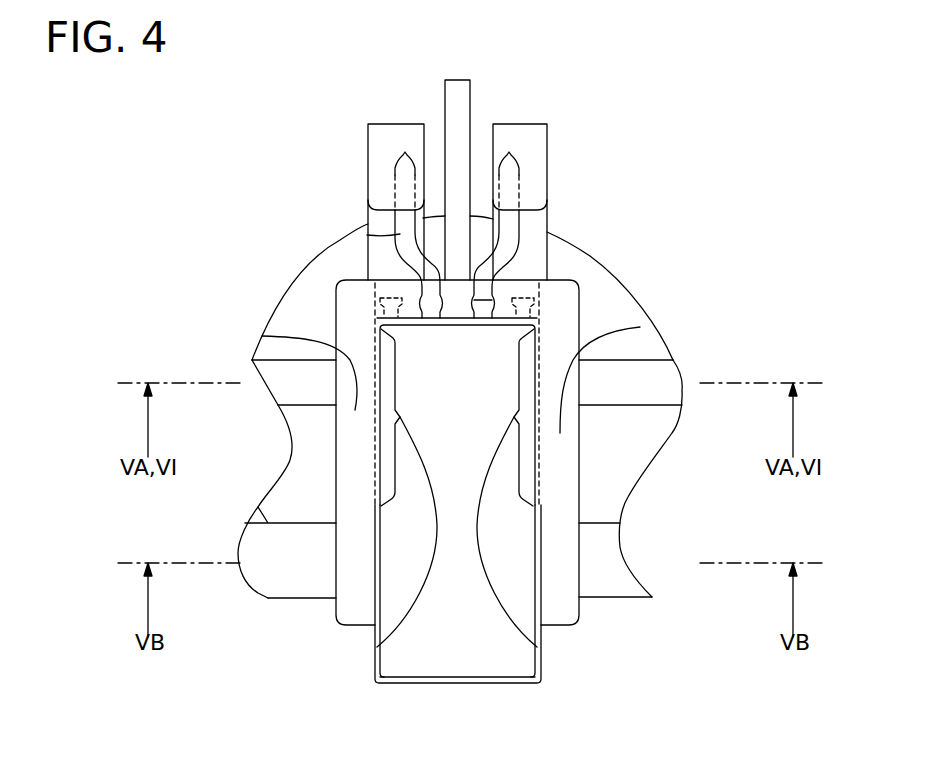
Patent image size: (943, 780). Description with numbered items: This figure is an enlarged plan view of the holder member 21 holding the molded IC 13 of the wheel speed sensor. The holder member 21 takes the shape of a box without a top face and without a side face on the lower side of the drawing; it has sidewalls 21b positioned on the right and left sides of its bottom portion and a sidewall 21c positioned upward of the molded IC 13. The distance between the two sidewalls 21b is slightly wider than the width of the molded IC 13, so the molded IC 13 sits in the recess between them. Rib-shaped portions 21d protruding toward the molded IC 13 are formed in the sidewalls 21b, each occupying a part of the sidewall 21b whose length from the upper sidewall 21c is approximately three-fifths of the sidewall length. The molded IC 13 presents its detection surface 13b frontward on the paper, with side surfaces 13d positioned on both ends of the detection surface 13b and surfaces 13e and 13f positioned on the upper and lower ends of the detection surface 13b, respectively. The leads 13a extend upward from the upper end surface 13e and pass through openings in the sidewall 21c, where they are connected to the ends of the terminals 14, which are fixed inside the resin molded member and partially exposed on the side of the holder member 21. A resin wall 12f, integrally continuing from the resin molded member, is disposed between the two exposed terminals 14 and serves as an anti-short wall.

The resin wall 12f is at (457, 88).
The molded IC 13 is at (396, 700).
The leads 13a is at (397, 290).
The detection surface 13b is at (502, 645).
The side surfaces 13d is at (373, 328).
The surface on upper end of detection surface 13e is at (497, 315).
The surface on lower end of detection surface 13f is at (462, 686).
The terminals 14 is at (393, 124).
The holder member 21 is at (558, 295).
The sidewalls 21b is at (262, 336).
The sidewall 21c is at (367, 235).
The rib-shaped portions 21d is at (376, 641).